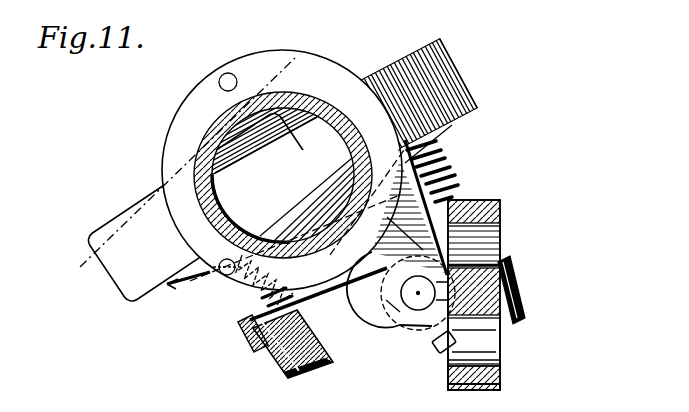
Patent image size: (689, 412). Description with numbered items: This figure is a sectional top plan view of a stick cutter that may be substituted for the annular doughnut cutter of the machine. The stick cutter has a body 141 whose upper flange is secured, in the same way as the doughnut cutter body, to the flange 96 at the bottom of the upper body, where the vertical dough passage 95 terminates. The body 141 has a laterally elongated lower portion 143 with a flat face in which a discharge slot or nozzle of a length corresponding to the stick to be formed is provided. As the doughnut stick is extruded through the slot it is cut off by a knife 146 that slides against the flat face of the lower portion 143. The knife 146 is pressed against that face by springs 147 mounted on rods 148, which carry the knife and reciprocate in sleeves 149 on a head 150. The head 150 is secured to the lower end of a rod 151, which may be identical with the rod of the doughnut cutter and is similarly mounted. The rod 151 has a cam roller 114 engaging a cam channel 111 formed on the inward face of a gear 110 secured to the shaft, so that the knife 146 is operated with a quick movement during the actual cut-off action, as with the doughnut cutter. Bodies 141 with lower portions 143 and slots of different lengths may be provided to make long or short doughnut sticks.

The vertical dough passage 95 is at (196, 196).
The flange 96 is at (166, 142).
The gear 110 is at (498, 376).
The cam channel 111 is at (494, 341).
The cam roller 114 is at (438, 348).
The body 141 is at (210, 233).
The laterally elongated lower portion 143 is at (468, 78).
The knife 146 is at (160, 297).
The springs 147 is at (431, 168).
The rods 148 is at (258, 336).
The sleeves 149 is at (292, 368).
The head 150 is at (340, 298).
The rod 151 is at (412, 300).